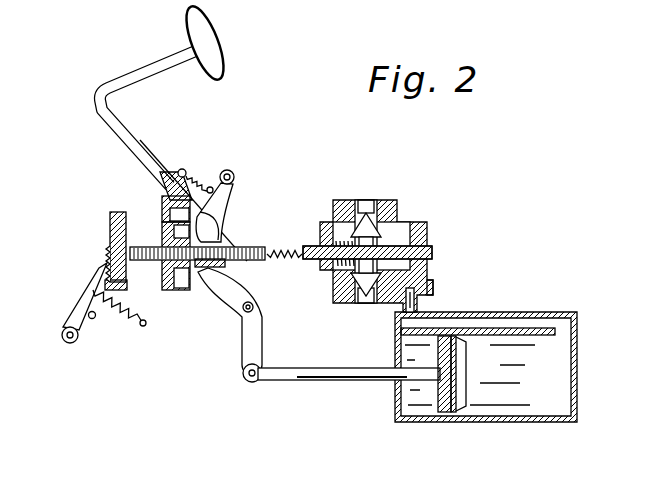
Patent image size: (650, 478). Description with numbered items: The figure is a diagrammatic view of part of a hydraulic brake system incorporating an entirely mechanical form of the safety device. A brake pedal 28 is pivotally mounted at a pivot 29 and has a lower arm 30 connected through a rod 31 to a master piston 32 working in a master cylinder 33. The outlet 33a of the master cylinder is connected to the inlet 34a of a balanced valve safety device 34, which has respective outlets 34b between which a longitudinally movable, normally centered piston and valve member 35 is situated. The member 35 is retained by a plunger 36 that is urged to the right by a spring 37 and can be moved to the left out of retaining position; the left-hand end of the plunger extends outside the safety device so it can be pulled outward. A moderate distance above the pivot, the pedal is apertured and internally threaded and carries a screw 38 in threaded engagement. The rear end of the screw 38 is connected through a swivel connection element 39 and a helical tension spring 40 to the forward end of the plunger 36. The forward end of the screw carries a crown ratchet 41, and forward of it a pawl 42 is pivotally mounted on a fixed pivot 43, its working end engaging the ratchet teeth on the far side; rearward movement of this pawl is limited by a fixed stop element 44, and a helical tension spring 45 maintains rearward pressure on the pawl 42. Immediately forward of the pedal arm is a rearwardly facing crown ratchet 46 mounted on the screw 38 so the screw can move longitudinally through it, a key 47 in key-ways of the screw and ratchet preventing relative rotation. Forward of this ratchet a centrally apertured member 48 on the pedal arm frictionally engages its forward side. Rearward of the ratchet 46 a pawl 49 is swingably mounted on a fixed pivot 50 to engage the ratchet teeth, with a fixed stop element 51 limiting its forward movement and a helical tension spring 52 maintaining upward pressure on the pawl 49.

The brake pedal 28 is at (155, 62).
The pivot 29 is at (246, 309).
The lower arm 30 is at (253, 342).
The rod 31 is at (350, 380).
The master piston 32 is at (457, 372).
The master cylinder 33 is at (511, 419).
The outlet 33a is at (415, 303).
The balanced valve safety device 34 is at (410, 227).
The inlet 34a is at (405, 281).
The outlets 34b is at (370, 200).
The piston and valve member 35 is at (352, 281).
The plunger 36 is at (433, 252).
The spring 37 is at (338, 262).
The screw 38 is at (243, 247).
The swivel connection element 39 is at (266, 262).
The helical tension spring 40 is at (287, 250).
The crown ratchet 41 is at (119, 212).
The pawl 42 is at (97, 279).
The fixed pivot 43 is at (64, 336).
The fixed stop element 44 is at (94, 318).
The spring 45 is at (119, 301).
The crown ratchet 46 is at (176, 289).
The key 47 is at (162, 246).
The centrally apertured member 48 is at (162, 218).
The pawl 49 is at (229, 197).
The fixed pivot 50 is at (233, 178).
The fixed stop element 51 is at (210, 187).
The helical tension spring 52 is at (192, 168).